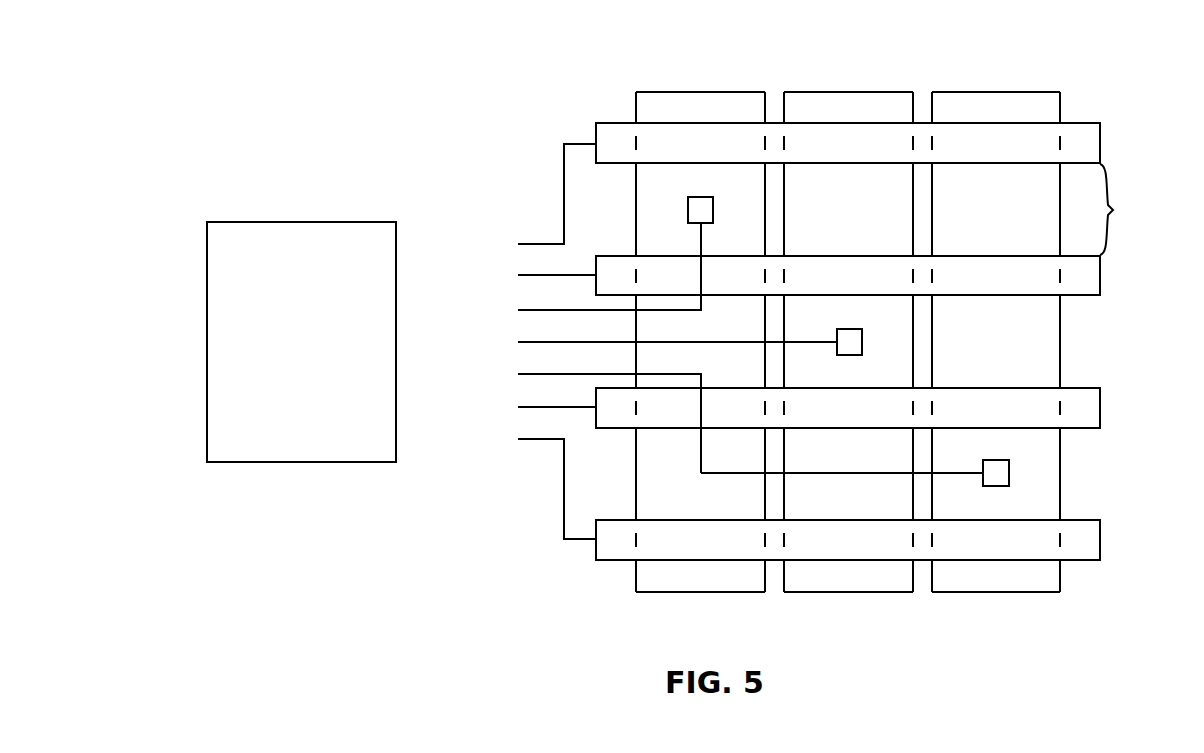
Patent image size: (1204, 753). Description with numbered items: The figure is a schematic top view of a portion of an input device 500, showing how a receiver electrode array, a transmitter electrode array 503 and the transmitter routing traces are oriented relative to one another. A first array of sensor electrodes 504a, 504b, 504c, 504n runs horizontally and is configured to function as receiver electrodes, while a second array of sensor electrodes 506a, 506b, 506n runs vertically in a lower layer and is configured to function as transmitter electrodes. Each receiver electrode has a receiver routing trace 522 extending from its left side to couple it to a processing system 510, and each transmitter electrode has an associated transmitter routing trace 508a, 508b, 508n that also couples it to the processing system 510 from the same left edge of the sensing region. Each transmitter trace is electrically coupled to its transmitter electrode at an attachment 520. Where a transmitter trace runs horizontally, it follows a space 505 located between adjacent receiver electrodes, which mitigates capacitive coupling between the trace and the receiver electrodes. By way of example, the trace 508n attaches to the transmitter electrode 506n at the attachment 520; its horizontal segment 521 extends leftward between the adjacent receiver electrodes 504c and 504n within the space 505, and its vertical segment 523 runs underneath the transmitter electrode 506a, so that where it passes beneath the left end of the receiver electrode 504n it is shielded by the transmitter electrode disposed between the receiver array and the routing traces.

The input device 500 is at (343, 101).
The sensor array 503 is at (922, 93).
The receiver electrode 504a is at (1100, 135).
The receiver electrode 504b is at (1100, 283).
The receiver electrode 504c is at (1100, 407).
The receiver electrode 504n is at (1100, 538).
The space 505 is at (1133, 209).
The transmitter electrode 506a is at (700, 593).
The transmitter electrode 506b is at (848, 593).
The transmitter electrode 506n is at (996, 593).
The transmitter routing trace 508a is at (528, 309).
The transmitter routing trace 508b is at (528, 341).
The transmitter routing trace 508n is at (528, 375).
The processing system 510 is at (302, 221).
The attachment 520 is at (1009, 467).
The horizontal segment 521 is at (825, 473).
The receiver routing trace 522 is at (563, 170).
The vertical segment 523 is at (700, 458).